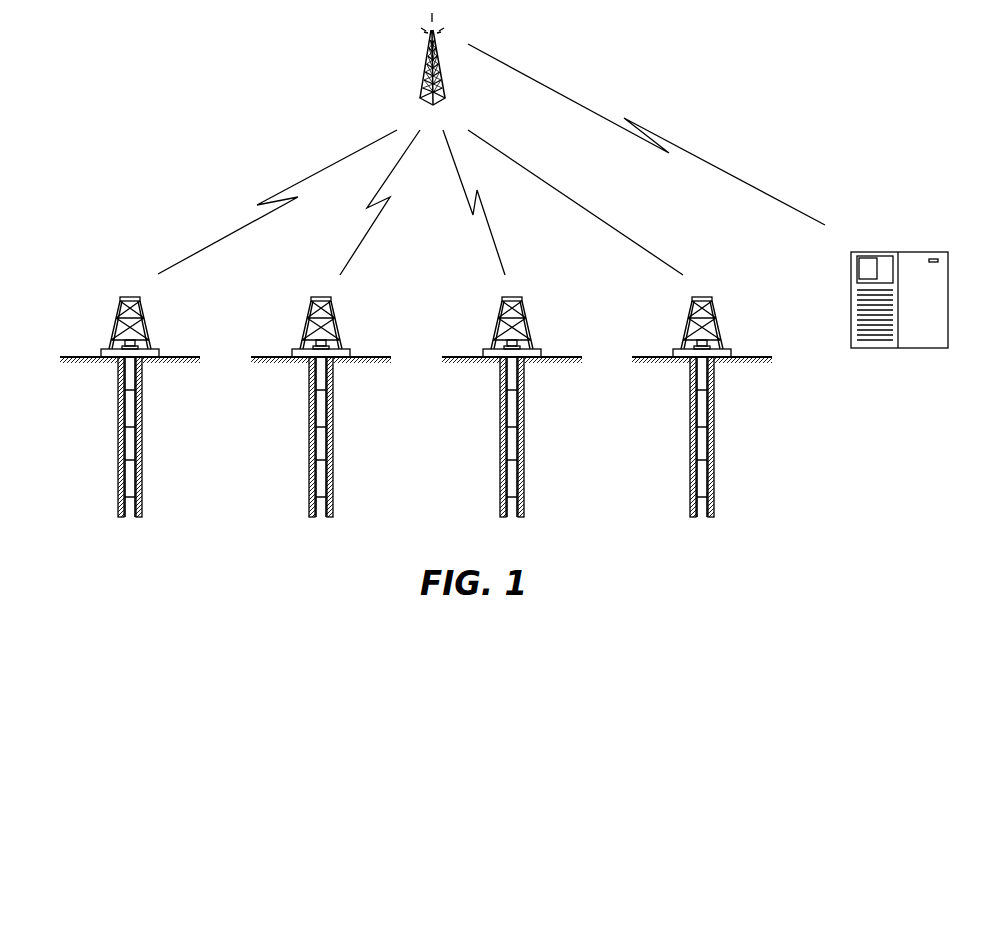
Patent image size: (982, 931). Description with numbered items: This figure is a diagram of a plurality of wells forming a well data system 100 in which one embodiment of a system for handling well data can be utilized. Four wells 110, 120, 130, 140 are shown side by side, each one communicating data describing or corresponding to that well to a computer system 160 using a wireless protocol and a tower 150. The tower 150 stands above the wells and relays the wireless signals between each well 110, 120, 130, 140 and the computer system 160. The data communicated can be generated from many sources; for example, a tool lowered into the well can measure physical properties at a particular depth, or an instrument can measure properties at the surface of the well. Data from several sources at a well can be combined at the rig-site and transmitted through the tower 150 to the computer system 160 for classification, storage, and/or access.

The well data system 100 is at (248, 75).
The well 110 is at (158, 321).
The well 120 is at (349, 321).
The well 130 is at (540, 321).
The well 140 is at (730, 322).
The tower 150 is at (423, 57).
The computer system 160 is at (887, 228).